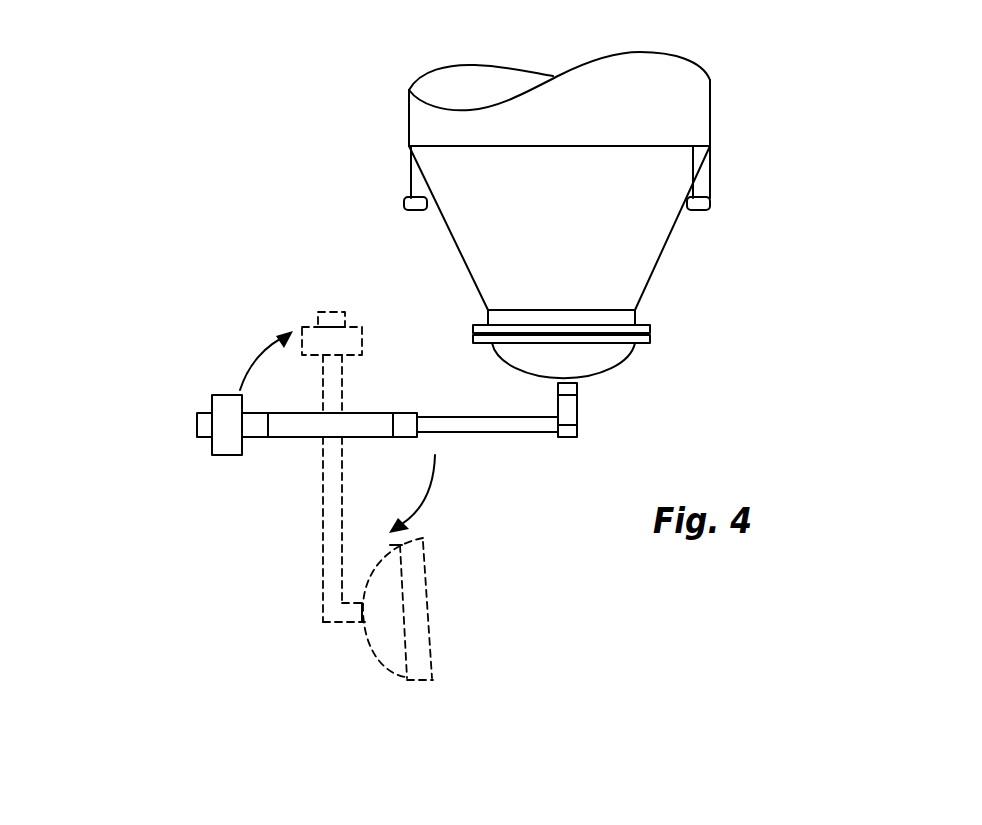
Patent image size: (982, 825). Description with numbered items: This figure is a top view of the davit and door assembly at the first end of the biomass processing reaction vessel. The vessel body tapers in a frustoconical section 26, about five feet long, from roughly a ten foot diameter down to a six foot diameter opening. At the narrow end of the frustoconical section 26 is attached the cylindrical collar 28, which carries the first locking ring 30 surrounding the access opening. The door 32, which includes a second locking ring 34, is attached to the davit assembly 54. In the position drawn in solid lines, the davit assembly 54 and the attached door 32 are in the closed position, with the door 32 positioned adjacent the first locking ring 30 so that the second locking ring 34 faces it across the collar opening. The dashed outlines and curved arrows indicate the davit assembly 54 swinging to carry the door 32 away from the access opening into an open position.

The frustoconical section 26 is at (662, 222).
The cylindrical collar 28 is at (637, 317).
The first locking ring 30 is at (470, 330).
The second locking ring 34 is at (470, 338).
The door 32 is at (607, 362).
The davit assembly 54 is at (196, 340).